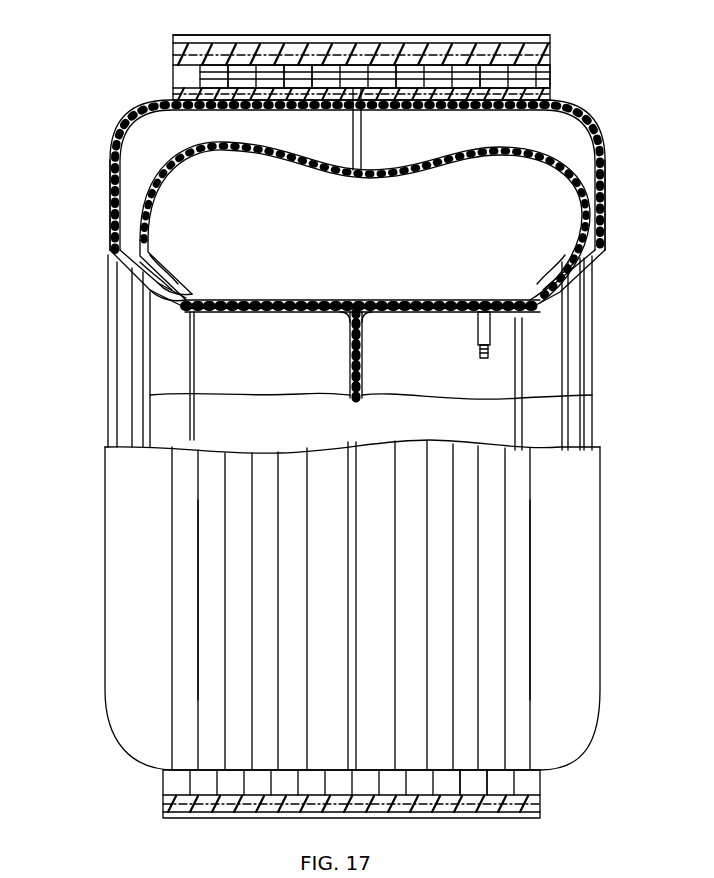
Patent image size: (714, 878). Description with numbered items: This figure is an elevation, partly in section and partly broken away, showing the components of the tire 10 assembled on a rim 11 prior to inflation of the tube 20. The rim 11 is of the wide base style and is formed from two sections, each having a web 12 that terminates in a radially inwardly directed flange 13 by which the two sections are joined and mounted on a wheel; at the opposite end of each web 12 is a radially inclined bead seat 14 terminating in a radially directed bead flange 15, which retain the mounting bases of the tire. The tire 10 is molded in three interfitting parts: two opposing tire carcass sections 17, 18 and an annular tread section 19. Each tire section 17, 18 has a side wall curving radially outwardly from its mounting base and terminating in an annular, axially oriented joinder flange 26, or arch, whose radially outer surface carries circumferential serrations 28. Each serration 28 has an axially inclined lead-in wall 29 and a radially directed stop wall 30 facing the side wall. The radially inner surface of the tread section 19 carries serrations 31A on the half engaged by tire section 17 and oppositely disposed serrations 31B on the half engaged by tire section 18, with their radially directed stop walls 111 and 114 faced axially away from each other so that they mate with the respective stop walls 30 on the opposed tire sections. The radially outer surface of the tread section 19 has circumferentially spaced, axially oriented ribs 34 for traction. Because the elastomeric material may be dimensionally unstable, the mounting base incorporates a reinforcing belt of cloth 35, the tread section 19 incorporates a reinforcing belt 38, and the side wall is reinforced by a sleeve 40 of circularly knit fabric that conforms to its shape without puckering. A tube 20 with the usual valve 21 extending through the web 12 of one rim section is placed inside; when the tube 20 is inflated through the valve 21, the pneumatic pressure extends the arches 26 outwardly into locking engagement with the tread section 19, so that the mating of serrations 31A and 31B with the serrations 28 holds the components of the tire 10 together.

The tire 10 is at (100, 118).
The rim 11 is at (126, 355).
The web 12 is at (262, 360).
The flange 13 is at (348, 371).
The bead seat 14 is at (542, 415).
The bead flange 15 is at (567, 425).
The tire carcass section 17 is at (108, 165).
The tire carcass section 18 is at (608, 176).
The tread section 19 is at (552, 52).
The tube 20 is at (218, 147).
The valve 21 is at (492, 336).
The joinder flange 26 is at (258, 100).
The serration 28 is at (455, 72).
The lead-in wall 29 is at (235, 598).
The stop wall 30 is at (222, 640).
The serration 31A is at (252, 790).
The serration 31B is at (472, 798).
The rib 34 is at (265, 37).
The reinforcing belt of cloth 35 is at (172, 270).
The reinforcing belt 38 is at (381, 52).
The sleeve 40 is at (124, 133).
The stop wall 111 is at (198, 75).
The stop wall 114 is at (552, 88).